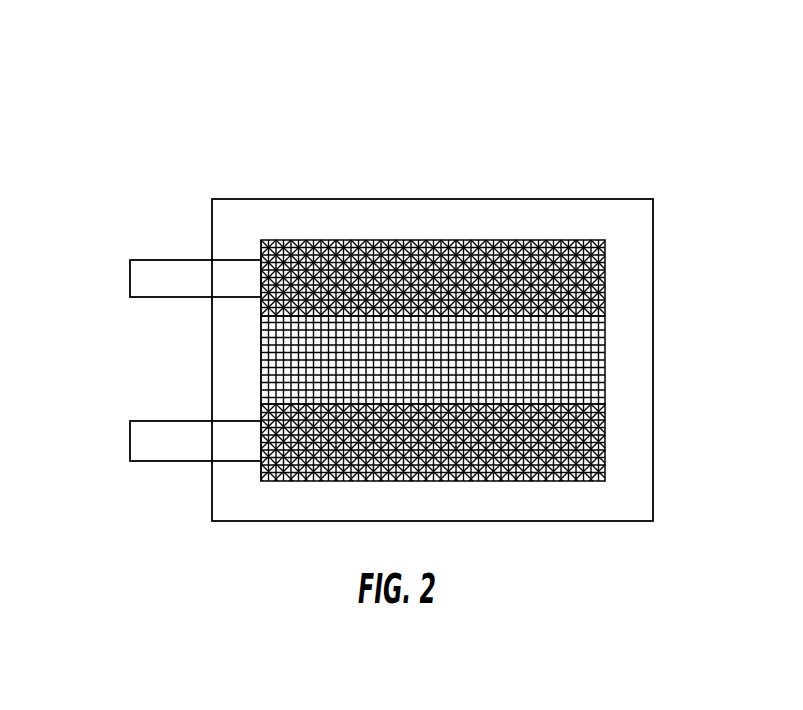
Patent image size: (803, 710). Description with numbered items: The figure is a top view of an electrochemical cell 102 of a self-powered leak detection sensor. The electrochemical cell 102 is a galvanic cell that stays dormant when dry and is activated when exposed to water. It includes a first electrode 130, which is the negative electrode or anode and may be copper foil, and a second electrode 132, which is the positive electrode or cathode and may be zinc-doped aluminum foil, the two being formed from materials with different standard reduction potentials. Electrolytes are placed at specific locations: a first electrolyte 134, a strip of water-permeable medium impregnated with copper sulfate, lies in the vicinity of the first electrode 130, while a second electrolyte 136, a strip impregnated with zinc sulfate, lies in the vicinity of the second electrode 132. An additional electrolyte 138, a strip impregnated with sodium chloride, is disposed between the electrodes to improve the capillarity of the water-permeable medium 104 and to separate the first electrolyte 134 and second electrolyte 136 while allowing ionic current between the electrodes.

The electrochemical cell 102 is at (116, 128).
The water-permeable medium 104 is at (277, 200).
The first electrode 130 is at (141, 251).
The second electrode 132 is at (141, 413).
The first electrolyte 134 is at (603, 307).
The second electrolyte 136 is at (603, 473).
The additional electrolyte 138 is at (603, 393).